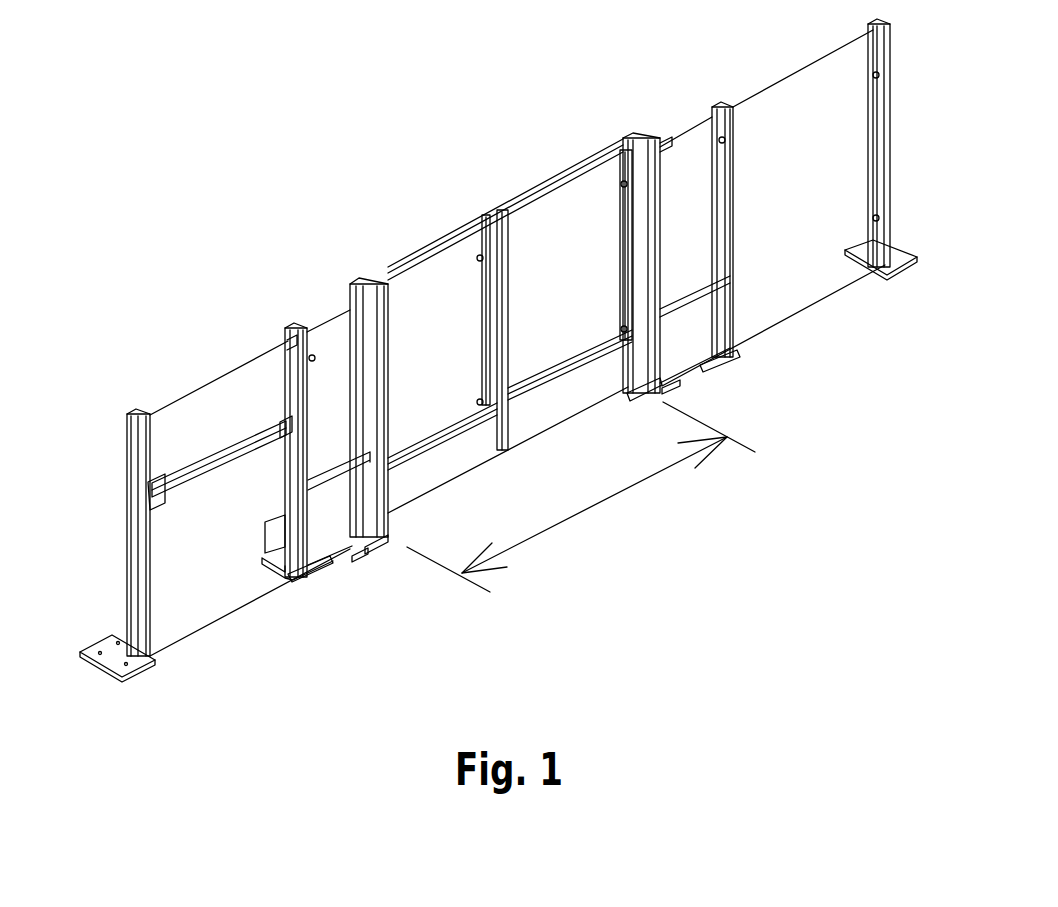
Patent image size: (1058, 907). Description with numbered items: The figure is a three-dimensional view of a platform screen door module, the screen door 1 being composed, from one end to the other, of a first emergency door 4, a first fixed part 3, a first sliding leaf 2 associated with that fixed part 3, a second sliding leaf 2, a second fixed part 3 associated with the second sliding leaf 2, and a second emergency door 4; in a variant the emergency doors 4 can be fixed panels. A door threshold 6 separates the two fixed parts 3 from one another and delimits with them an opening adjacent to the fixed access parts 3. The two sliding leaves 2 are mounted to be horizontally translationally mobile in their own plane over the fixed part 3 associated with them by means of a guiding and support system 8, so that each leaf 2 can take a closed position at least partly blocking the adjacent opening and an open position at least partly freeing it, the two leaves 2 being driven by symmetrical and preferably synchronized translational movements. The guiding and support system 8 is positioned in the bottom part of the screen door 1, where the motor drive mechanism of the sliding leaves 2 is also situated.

The screen door 1 is at (200, 256).
The sliding leaf 2 is at (430, 290).
The fixed part 3 is at (322, 338).
The emergency door 4 is at (213, 415).
The door threshold 6 is at (627, 490).
The guiding and support system 8 is at (273, 532).